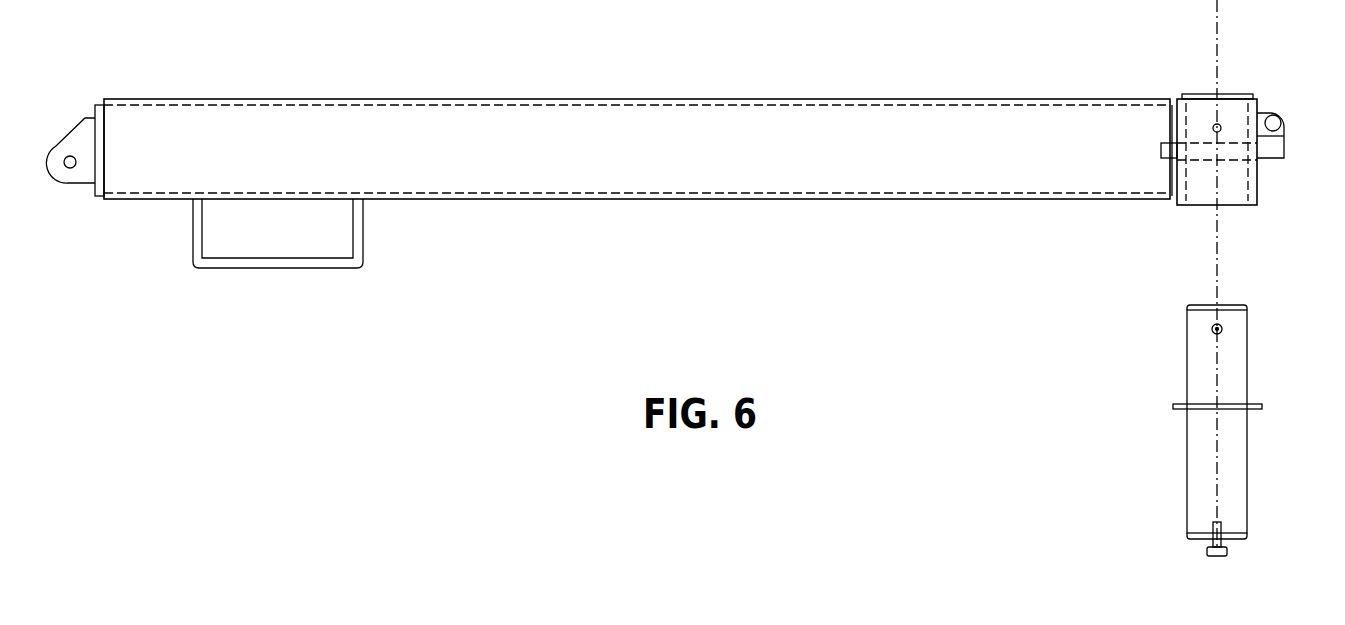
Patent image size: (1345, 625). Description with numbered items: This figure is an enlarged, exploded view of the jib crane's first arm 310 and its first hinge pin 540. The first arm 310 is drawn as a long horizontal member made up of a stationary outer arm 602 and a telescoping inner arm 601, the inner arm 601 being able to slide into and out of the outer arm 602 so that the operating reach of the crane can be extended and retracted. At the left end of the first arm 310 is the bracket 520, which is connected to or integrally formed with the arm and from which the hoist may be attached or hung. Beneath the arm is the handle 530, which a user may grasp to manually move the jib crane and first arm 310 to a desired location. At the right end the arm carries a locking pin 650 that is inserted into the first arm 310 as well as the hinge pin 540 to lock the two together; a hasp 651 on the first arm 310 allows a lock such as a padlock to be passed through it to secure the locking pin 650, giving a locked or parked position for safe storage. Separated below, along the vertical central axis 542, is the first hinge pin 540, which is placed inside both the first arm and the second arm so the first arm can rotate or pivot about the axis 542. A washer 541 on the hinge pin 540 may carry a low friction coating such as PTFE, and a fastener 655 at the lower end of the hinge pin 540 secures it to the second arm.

The first arm 310 is at (663, 167).
The bracket 520 is at (76, 142).
The handle 530 is at (277, 270).
The first hinge pin 540 is at (1187, 492).
The washer 541 is at (1246, 396).
The central axis 542 is at (1217, 32).
The telescoping inner arm 601 is at (438, 138).
The stationary outer arm 602 is at (273, 98).
The locking pin 650 is at (1272, 150).
The hasp 651 is at (1262, 113).
The fastener 655 is at (1228, 553).